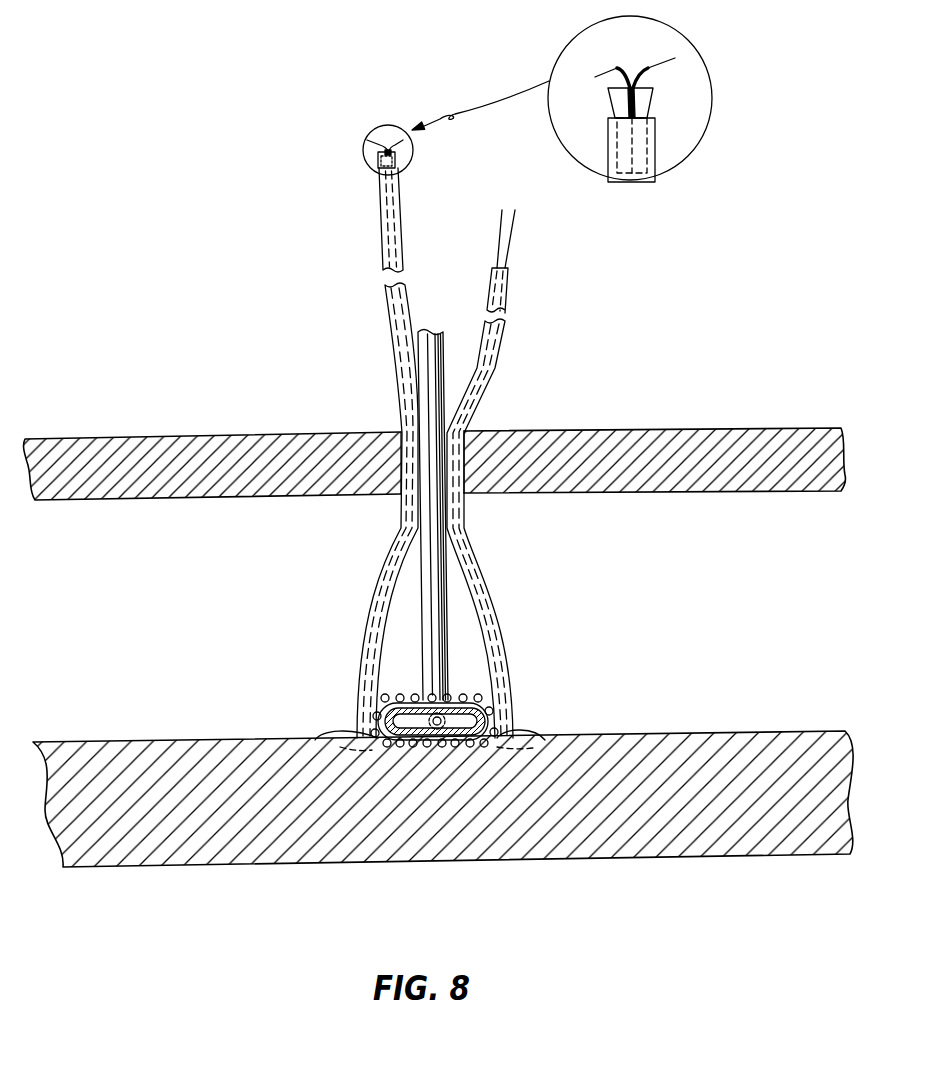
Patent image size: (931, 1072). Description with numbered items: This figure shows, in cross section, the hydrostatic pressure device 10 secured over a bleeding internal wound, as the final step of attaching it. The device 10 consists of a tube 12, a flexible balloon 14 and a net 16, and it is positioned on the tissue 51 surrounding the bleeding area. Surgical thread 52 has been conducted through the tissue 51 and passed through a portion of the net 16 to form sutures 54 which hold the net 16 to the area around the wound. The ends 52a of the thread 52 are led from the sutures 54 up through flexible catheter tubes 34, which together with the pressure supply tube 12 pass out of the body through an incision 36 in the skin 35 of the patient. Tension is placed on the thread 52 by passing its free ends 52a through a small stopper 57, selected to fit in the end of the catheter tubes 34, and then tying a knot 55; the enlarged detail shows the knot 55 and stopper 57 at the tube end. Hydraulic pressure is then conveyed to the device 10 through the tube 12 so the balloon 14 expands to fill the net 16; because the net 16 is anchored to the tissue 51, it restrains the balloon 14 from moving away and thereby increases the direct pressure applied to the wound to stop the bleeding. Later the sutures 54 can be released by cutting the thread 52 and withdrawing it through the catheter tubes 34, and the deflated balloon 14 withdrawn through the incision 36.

The hydrostatic pressure device 10 is at (458, 678).
The tube 12 is at (423, 634).
The balloon 14 is at (495, 703).
The net 16 is at (387, 698).
The catheter tubes 34 is at (402, 219).
The skin 35 is at (553, 432).
The incision 36 is at (473, 435).
The tissue 51 is at (717, 730).
The thread 52 is at (523, 728).
The ends of thread 52a is at (507, 257).
The sutures 54 is at (555, 722).
The knot 55 is at (388, 148).
The stopper 57 is at (396, 158).